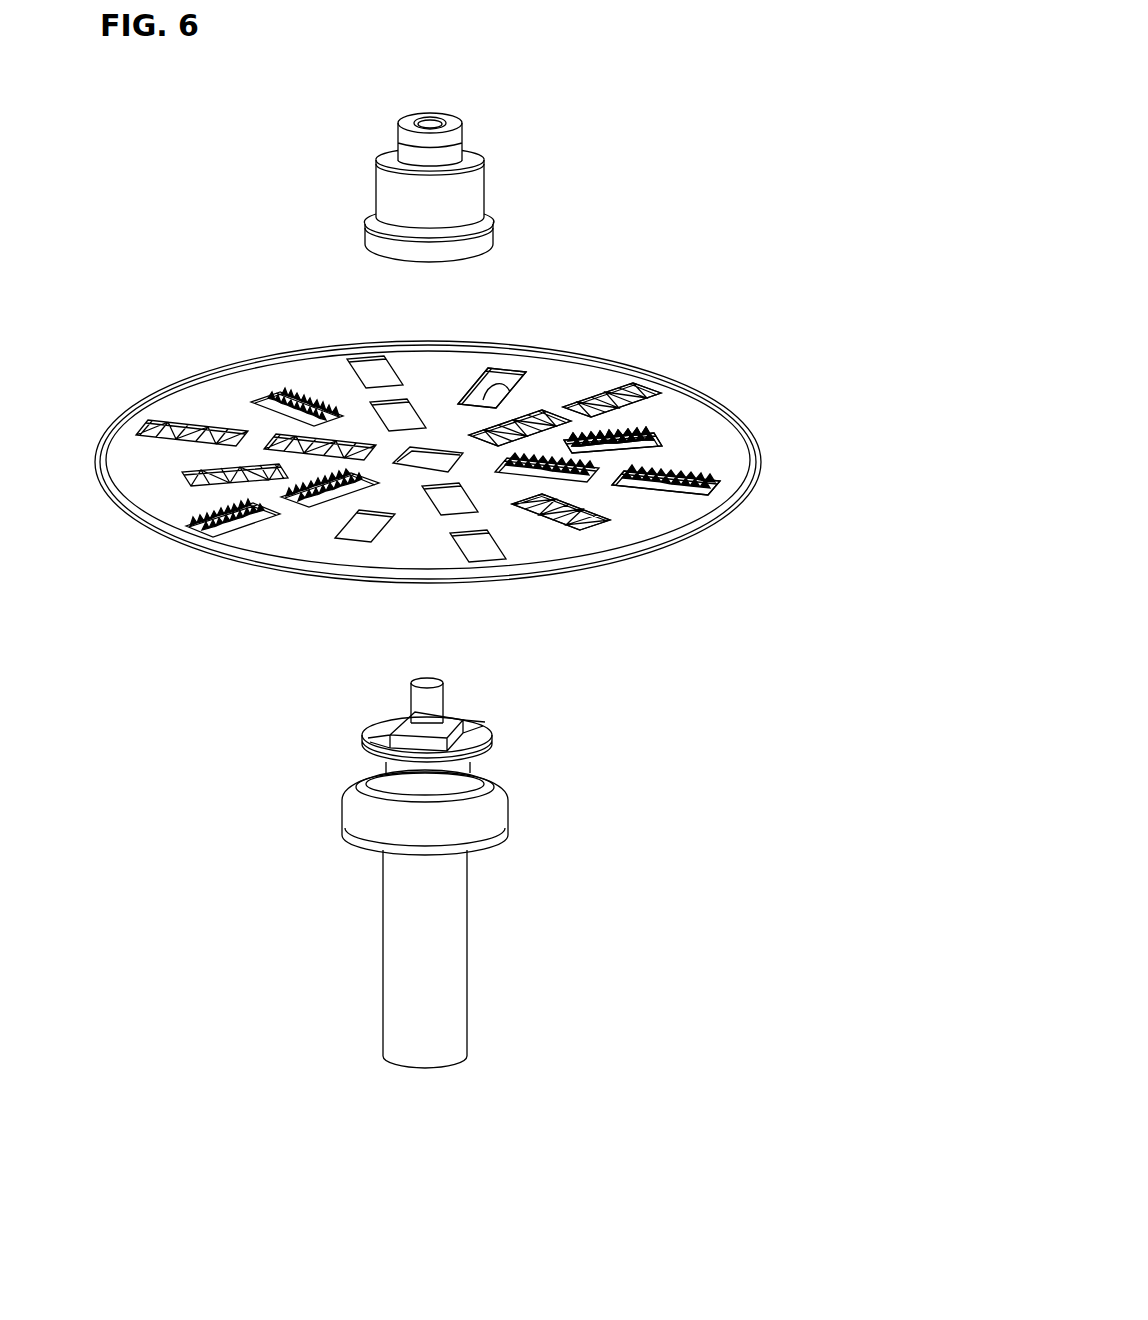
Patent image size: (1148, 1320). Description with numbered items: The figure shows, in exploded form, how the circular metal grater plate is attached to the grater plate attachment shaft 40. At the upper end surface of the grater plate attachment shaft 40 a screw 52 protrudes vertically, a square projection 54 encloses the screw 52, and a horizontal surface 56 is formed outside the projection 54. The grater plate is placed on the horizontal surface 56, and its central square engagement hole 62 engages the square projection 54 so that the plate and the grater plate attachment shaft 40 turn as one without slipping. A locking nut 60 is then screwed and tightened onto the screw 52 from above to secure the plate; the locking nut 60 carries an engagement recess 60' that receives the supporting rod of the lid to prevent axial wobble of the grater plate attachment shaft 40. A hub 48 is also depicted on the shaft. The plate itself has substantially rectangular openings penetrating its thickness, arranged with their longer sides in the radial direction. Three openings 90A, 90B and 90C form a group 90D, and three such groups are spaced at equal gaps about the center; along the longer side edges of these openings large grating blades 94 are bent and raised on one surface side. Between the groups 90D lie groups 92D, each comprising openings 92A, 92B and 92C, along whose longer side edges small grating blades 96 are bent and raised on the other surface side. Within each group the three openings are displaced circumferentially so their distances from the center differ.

The grater plate attachment shaft 40 is at (467, 965).
The hub 48 is at (510, 802).
The screw 52 is at (444, 693).
The square projection 54 is at (445, 712).
The horizontal surface 56 is at (480, 730).
The locking nut 60 is at (497, 187).
The engagement recess 60' is at (468, 111).
The square engagement hole 62 is at (410, 462).
The opening 90A is at (633, 397).
The opening 90B is at (510, 387).
The opening 90C is at (547, 420).
The group of openings 90D is at (808, 250).
The opening 92A is at (703, 487).
The opening 92B is at (645, 438).
The opening 92C is at (607, 524).
The group of openings 92D is at (846, 463).
The large grating blades 94 is at (152, 428).
The small grating blades 96 is at (670, 436).